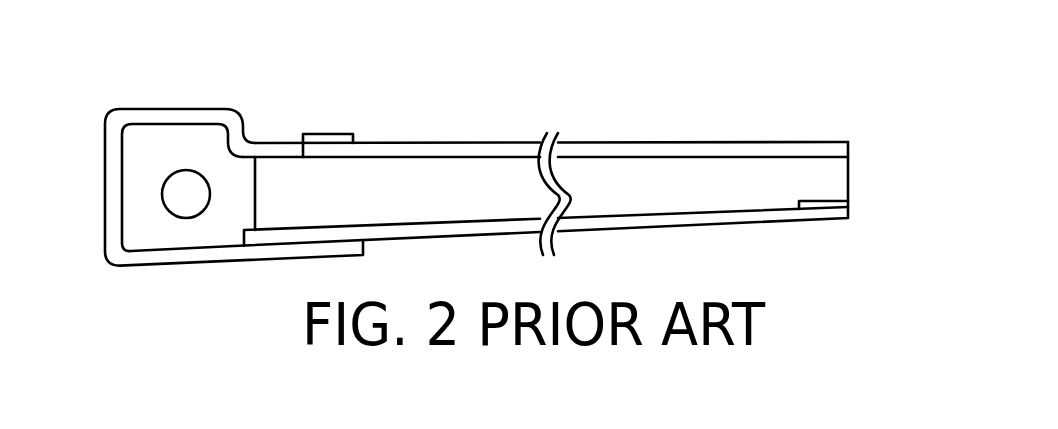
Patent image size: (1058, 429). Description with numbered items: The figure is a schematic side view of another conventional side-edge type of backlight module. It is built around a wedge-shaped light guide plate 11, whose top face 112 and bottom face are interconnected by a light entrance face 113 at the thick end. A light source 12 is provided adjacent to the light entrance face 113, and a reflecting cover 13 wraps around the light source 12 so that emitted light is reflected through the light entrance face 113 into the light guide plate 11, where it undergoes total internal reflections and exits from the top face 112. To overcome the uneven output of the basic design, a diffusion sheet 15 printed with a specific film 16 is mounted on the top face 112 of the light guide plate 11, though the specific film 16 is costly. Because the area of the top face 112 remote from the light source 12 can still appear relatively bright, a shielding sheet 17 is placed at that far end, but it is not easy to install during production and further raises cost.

The light guide plate 11 is at (818, 177).
The light source 12 is at (186, 194).
The reflecting cover 13 is at (152, 109).
The diffusion sheet 15 is at (397, 143).
The specific film 16 is at (327, 133).
The shielding sheet 17 is at (837, 202).
The top face 112 is at (838, 157).
The light entrance face 113 is at (256, 173).